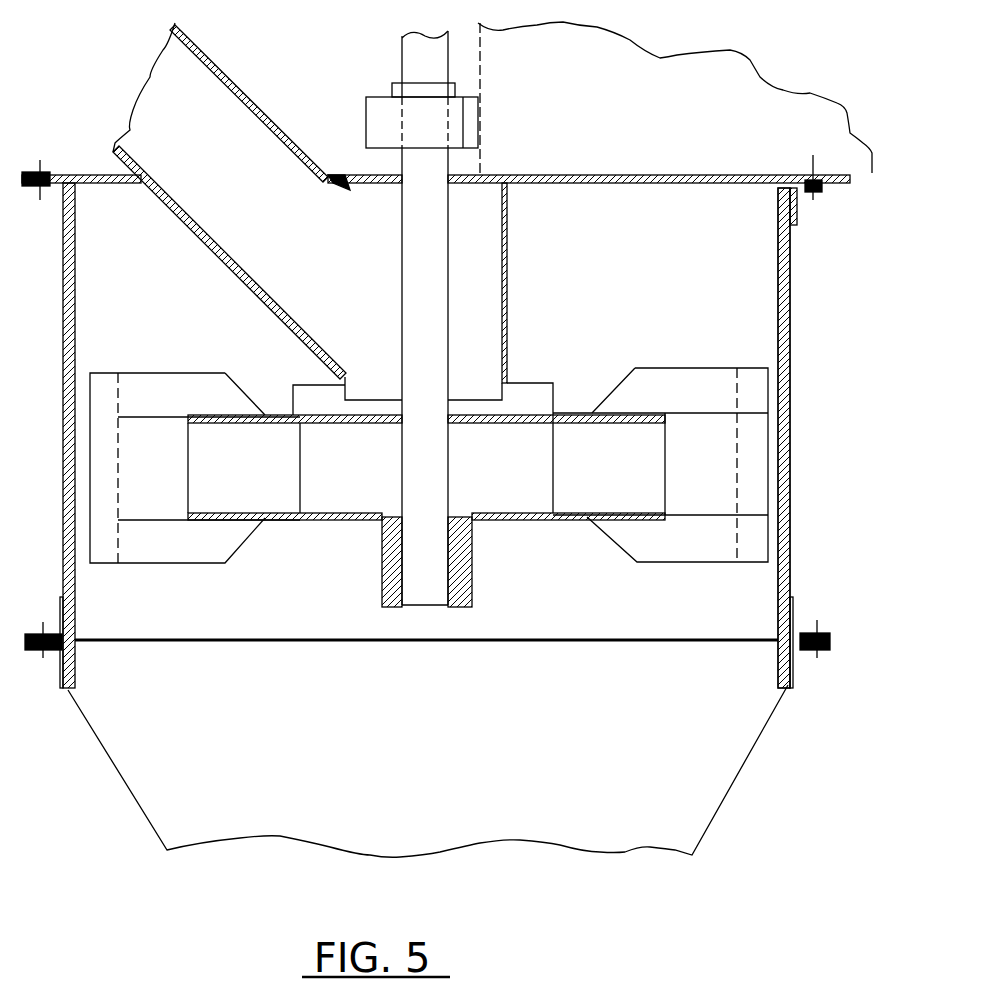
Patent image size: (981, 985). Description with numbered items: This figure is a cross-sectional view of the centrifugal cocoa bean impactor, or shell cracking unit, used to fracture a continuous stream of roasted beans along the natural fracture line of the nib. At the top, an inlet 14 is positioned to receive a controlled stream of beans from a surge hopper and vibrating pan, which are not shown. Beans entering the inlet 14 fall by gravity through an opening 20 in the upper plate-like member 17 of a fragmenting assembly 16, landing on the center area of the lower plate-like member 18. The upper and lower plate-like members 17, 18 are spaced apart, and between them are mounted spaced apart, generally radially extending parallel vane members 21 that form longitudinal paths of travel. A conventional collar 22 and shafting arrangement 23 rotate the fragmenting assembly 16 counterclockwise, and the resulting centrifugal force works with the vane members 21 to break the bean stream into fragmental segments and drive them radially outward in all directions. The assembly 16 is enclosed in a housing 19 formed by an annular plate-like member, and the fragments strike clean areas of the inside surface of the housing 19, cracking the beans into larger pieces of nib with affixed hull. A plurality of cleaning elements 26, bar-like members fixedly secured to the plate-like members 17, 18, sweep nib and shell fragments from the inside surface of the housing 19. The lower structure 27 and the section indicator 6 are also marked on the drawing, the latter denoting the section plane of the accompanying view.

The inlet 14 is at (213, 63).
The fragmenting assembly 16 is at (607, 340).
The upper plate-like member 17 is at (283, 413).
The lower plate-like member 18 is at (487, 520).
The housing 19 is at (792, 342).
The opening 20 is at (548, 415).
The vane members 21 is at (271, 453).
The collar 22 is at (380, 566).
The shafting arrangement 23 is at (403, 334).
The cleaning elements 26 is at (120, 453).
The lower housing 27 is at (703, 833).
The section line 6- 6 is at (100, 443).